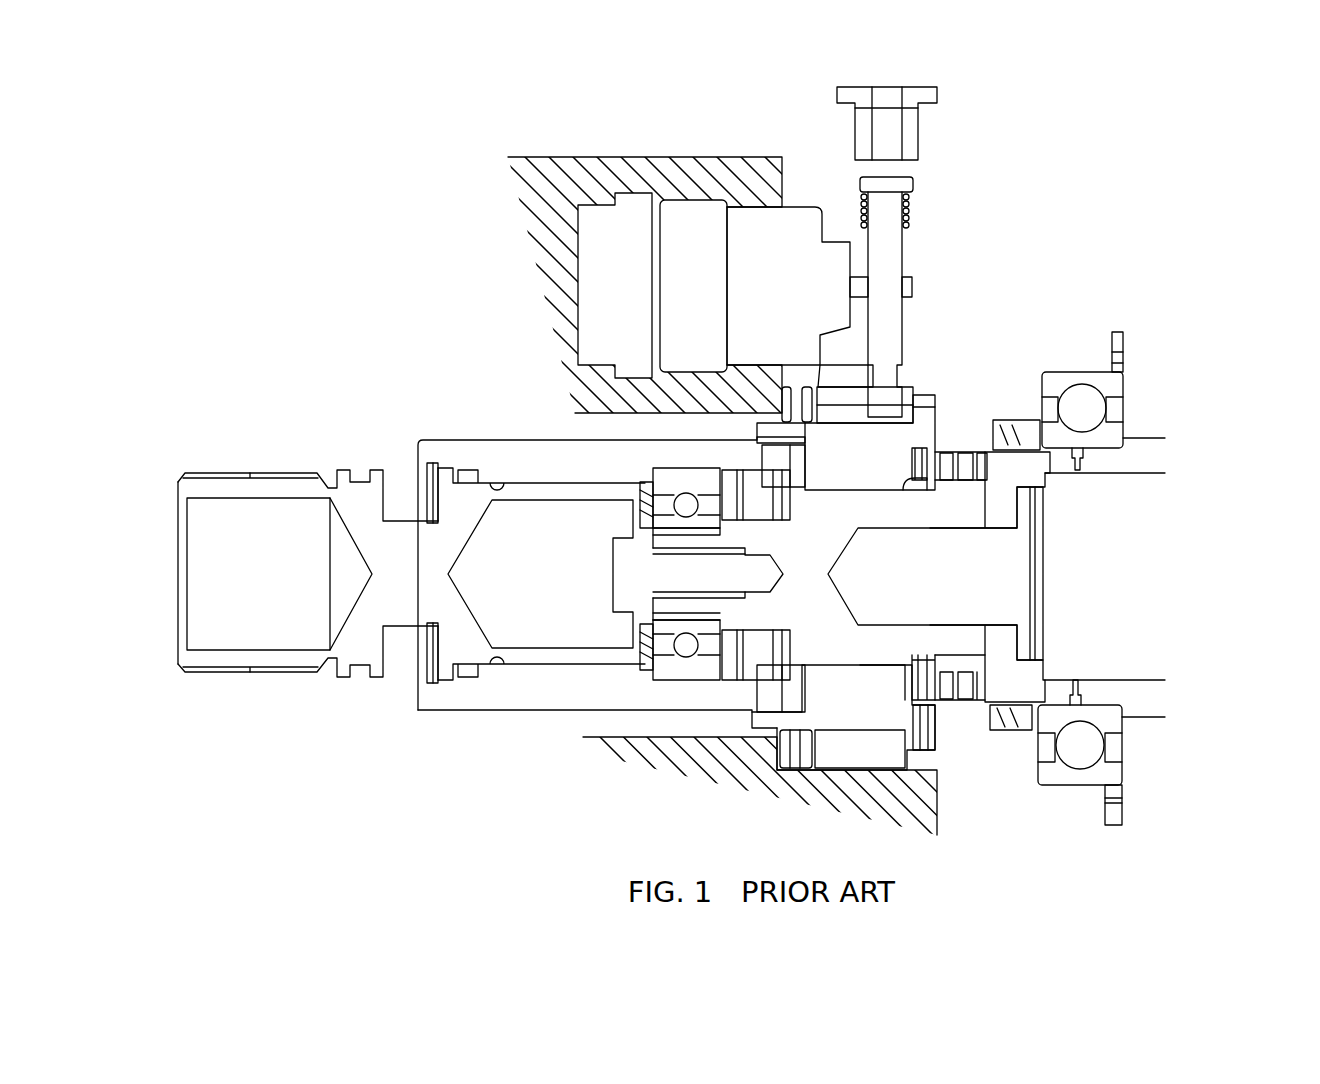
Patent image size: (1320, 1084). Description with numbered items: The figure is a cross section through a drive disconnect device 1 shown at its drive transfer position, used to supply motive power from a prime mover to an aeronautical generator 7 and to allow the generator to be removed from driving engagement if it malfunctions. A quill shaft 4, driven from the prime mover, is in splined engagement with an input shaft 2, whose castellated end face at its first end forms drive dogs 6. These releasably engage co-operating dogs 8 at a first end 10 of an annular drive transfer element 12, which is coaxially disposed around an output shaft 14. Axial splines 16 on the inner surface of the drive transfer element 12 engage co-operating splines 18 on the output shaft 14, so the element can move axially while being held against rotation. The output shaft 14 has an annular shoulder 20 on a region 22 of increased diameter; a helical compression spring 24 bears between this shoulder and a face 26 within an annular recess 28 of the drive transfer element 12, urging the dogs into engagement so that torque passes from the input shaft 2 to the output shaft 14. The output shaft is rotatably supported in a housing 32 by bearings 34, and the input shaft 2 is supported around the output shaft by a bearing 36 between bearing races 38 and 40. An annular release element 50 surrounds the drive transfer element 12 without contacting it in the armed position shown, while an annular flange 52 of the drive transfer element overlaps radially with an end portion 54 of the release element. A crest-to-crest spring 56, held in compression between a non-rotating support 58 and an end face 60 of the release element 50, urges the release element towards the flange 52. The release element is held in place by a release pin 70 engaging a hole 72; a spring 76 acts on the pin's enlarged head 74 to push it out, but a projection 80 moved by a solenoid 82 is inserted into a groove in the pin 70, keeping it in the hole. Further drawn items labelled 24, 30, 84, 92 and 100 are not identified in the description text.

The drive disconnect device 1 is at (337, 394).
The input shaft 2 is at (455, 447).
The quill shaft 4 is at (265, 662).
The drive dogs 6 is at (790, 440).
The aeronautical generator 7 is at (1182, 626).
The co-operating dogs 8 is at (803, 447).
The first end of drive transfer element 10 is at (805, 716).
The drive transfer element 12 is at (852, 490).
The output shaft 14 is at (865, 660).
The axial splines 16 is at (905, 470).
The co-operating splines 18 is at (895, 667).
The annular shoulder 20 is at (1005, 470).
The region of increased diameter 22 is at (1020, 700).
The helical compression spring 24 is at (955, 735).
The face 26 is at (912, 480).
The annular recess 28 is at (962, 440).
The ring 30 is at (925, 748).
The housing 32 is at (1118, 332).
The bearings 34 is at (1098, 410).
The bearing 36 is at (685, 656).
The bearing race 38 is at (690, 670).
The bearing race 40 is at (642, 632).
The annular release element 50 is at (885, 770).
The annular flange 52 is at (932, 425).
The end portion 54 is at (915, 405).
The spring 56 is at (800, 768).
The non-rotating support 58 is at (738, 386).
The end face 60 is at (797, 405).
The release pin 70 is at (910, 212).
The hole 72 is at (862, 382).
The enlarged head 74 is at (862, 185).
The spring 76 is at (910, 222).
The projection 80 is at (852, 287).
The solenoid 82 is at (762, 215).
The notch 84 is at (908, 290).
The screw 92 is at (937, 95).
The ring 100 is at (958, 480).